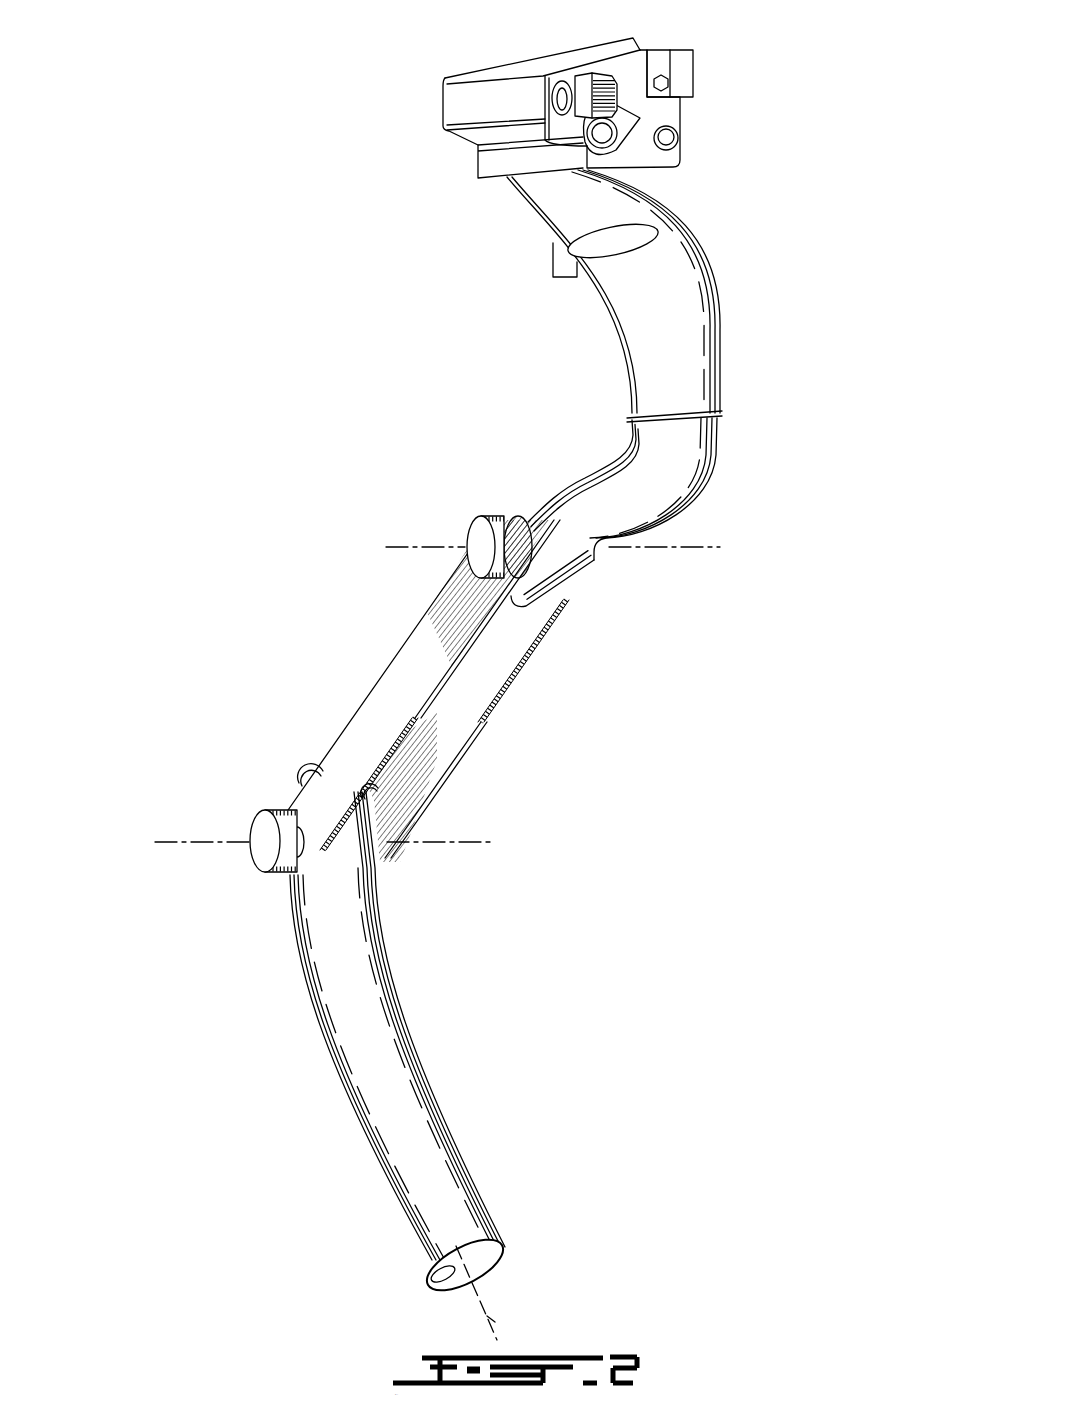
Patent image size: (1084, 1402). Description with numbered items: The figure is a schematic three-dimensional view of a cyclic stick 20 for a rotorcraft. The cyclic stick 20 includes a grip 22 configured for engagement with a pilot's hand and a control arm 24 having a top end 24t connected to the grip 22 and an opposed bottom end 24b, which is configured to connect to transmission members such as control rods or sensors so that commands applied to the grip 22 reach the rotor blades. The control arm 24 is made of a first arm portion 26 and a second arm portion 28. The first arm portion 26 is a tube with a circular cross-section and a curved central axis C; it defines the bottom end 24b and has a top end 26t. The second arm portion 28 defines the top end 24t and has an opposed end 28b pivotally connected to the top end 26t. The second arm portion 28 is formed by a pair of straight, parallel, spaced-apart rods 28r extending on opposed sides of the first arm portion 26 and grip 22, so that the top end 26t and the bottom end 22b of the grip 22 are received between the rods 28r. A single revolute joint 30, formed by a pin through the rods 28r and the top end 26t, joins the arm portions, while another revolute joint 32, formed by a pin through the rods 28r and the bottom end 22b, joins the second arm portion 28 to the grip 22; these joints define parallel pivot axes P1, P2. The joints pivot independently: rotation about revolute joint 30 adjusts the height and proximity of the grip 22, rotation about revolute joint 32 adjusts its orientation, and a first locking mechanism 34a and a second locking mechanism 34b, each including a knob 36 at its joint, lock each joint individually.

The cyclic stick 20 is at (803, 130).
The grip 22 is at (445, 80).
The bottom end of the grip 22b is at (576, 512).
The control arm 24 is at (262, 598).
The top end of the control arm 24t is at (608, 570).
The bottom end of the control arm 24b is at (510, 1253).
The first arm portion 26 is at (447, 1133).
The top end of the first arm portion 26t is at (306, 776).
The second arm portion 28 is at (490, 728).
The rods 28r is at (413, 740).
The opposed end of the second arm portion 28b is at (380, 861).
The revolute joint 30 is at (291, 872).
The revolute joint 32 is at (513, 517).
The first locking mechanism 34a is at (258, 854).
The second locking mechanism 34b is at (474, 551).
The knob 36 is at (479, 528).
The pivot axis P1 is at (170, 840).
The pivot axis P2 is at (384, 545).
The curved central axis C is at (497, 1318).